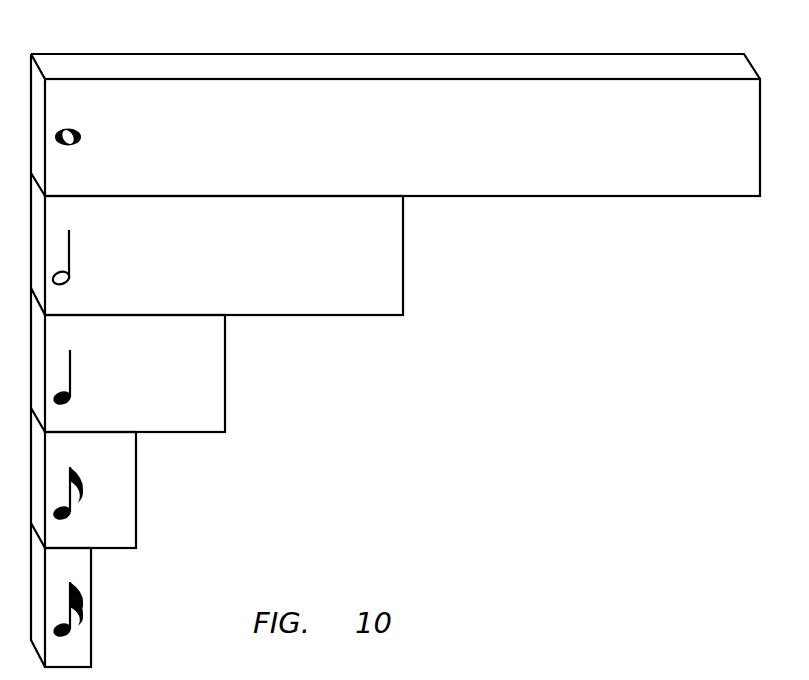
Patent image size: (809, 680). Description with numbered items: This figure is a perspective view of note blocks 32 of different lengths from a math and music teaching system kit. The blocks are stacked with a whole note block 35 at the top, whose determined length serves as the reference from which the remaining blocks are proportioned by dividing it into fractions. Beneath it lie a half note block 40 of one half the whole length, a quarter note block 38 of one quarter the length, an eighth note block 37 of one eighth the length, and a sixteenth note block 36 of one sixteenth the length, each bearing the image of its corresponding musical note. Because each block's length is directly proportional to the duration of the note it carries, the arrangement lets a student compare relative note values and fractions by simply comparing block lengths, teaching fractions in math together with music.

The note blocks 32 is at (503, 42).
The whole note block 35 is at (645, 183).
The half note block 40 is at (382, 273).
The quarter note block 38 is at (205, 388).
The eighth note block 37 is at (117, 503).
The sixteenth note block 36 is at (80, 650).